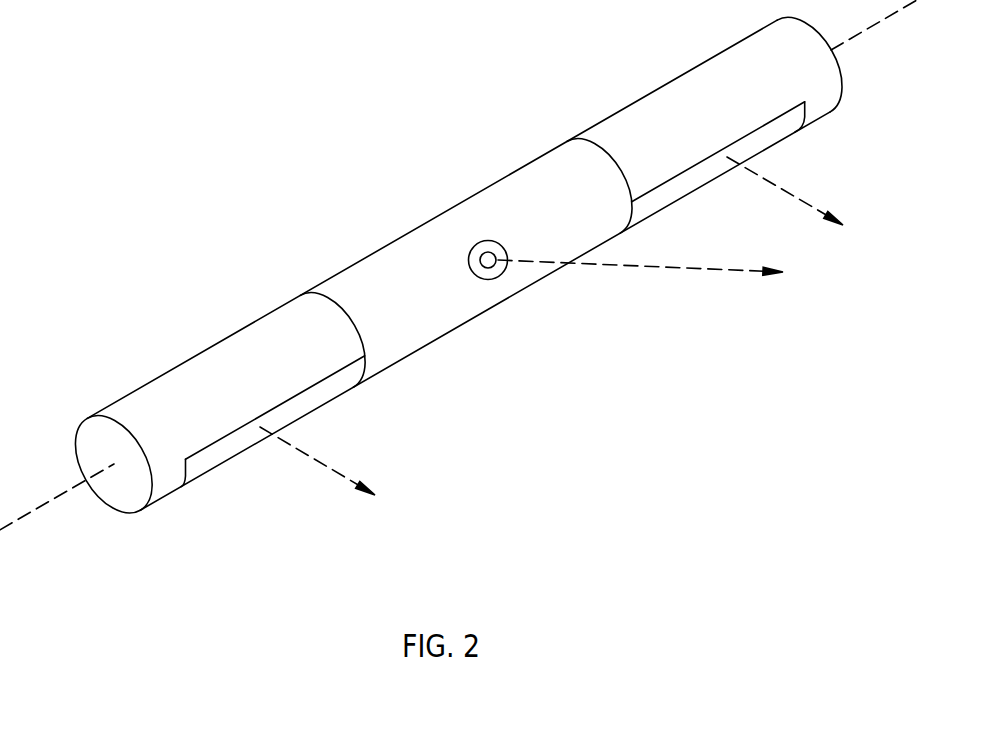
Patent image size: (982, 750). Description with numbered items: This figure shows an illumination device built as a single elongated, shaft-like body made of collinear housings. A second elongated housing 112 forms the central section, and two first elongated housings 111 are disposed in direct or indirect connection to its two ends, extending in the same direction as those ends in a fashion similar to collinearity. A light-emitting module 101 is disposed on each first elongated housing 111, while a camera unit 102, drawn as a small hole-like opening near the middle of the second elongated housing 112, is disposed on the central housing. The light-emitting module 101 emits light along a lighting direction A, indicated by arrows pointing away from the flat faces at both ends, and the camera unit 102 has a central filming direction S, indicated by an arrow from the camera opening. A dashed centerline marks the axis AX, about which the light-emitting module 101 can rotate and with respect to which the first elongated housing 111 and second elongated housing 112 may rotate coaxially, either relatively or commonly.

The light-emitting module 101 is at (207, 443).
The camera unit 102 is at (492, 240).
The first elongated housing 111 is at (218, 368).
The second elongated housing 112 is at (403, 257).
The axis AX is at (37, 507).
The central filming direction S is at (652, 272).
The lighting direction A is at (561, 338).